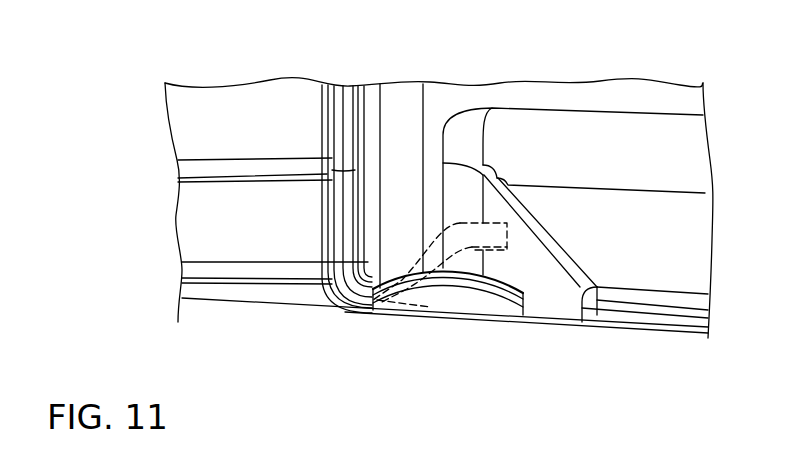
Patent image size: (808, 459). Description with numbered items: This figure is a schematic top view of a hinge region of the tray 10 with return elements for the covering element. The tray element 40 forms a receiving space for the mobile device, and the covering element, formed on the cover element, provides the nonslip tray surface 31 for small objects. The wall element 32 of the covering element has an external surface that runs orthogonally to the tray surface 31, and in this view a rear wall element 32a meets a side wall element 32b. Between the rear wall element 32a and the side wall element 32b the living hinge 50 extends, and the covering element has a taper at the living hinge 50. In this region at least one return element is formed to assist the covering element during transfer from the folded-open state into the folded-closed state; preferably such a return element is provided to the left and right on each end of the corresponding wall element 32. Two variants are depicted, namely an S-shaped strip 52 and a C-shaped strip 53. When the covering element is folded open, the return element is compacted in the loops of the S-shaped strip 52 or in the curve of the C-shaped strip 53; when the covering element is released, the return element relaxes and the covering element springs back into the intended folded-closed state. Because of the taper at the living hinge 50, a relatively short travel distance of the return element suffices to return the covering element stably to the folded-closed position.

The tray 10 is at (130, 85).
The tray surface 31 is at (728, 82).
The wall element 32 is at (529, 202).
The rear wall element 32a is at (342, 92).
The side wall element 32b is at (697, 313).
The tray element 40 is at (200, 329).
The living hinge 50 is at (407, 74).
The S-shaped strip 52 is at (448, 250).
The C-shaped strip 53 is at (477, 279).